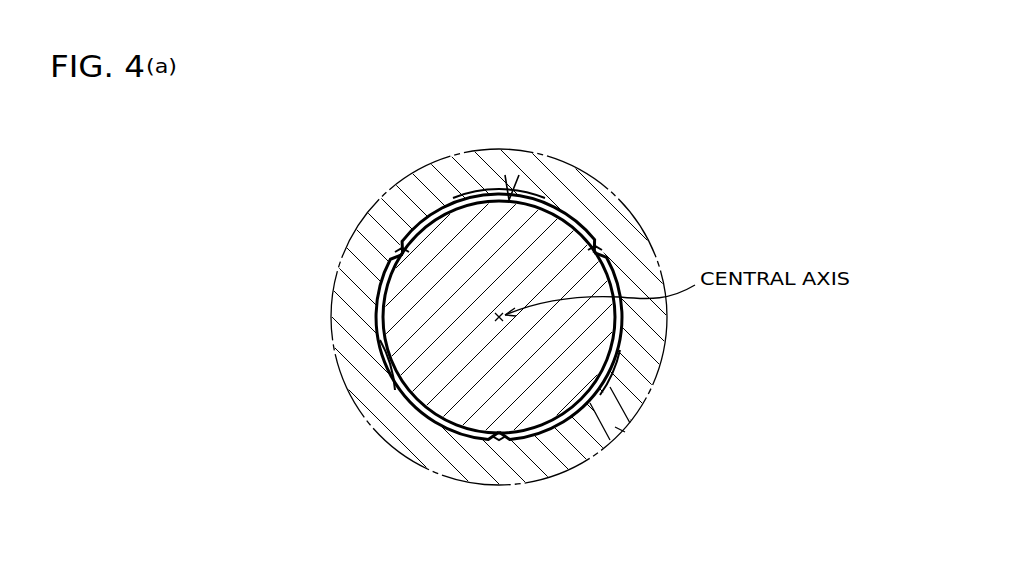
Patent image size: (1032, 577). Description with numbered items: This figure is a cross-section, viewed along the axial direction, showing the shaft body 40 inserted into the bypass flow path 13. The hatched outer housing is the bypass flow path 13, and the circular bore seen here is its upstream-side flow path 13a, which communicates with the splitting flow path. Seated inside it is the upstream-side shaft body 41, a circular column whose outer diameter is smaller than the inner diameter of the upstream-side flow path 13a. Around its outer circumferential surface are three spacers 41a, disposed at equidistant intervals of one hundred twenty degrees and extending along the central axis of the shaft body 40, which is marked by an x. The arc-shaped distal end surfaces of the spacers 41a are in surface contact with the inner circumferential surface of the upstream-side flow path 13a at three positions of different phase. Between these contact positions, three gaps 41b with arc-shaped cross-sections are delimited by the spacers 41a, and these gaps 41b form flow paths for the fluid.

The bypass flow path 13 is at (590, 403).
The upstream-side flow path 13a is at (389, 360).
The shaft body 40 is at (511, 197).
The upstream-side shaft body 41 is at (614, 330).
The spacers 41a is at (393, 249).
The gaps 41b is at (453, 199).